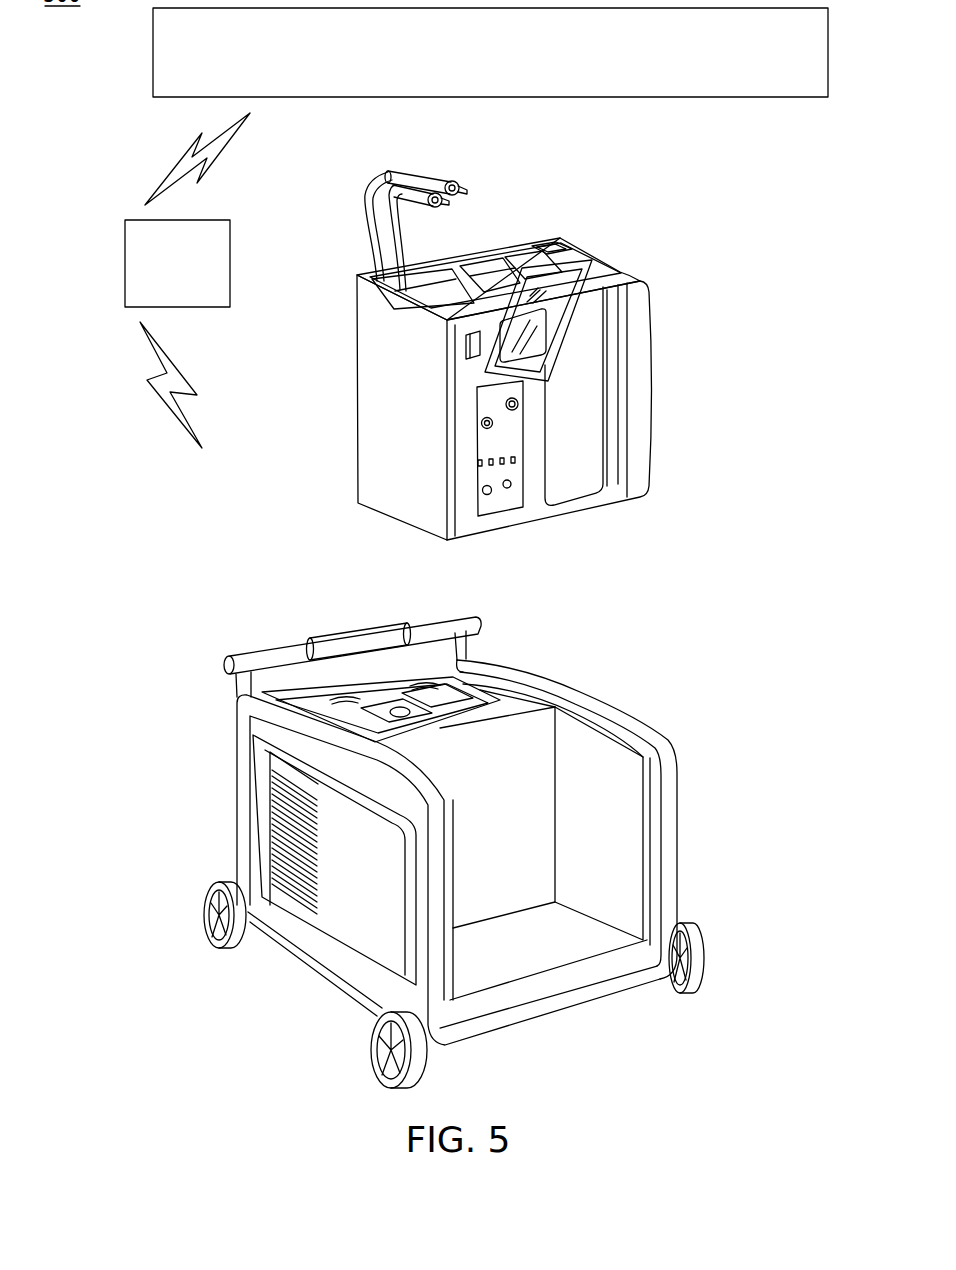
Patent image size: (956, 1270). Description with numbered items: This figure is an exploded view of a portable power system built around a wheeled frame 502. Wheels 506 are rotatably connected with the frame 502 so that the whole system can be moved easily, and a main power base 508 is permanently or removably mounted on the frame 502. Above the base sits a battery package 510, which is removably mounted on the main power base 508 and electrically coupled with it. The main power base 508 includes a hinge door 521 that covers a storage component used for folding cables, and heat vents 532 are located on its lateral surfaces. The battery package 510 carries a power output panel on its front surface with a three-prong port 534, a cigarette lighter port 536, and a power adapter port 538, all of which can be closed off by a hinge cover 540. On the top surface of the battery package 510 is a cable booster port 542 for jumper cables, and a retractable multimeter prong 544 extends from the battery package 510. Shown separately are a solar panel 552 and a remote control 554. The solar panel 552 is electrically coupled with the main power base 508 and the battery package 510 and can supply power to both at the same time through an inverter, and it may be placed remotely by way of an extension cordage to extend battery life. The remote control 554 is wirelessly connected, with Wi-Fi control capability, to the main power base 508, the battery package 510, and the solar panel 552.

The frame 502 is at (670, 878).
The wheels 506 is at (225, 882).
The main power base 508 is at (519, 705).
The battery package 510 is at (357, 505).
The hinge door 521 is at (385, 697).
The heat vents 532 is at (300, 888).
The 3-prong port 534 is at (487, 495).
The cigarette lighter port 536 is at (481, 423).
The power adapter port 538 is at (506, 403).
The hinge cover 540 is at (597, 277).
The cable booster port 542 is at (542, 243).
The retractable multimeter prong 544 is at (432, 178).
The solar panel 552 is at (490, 52).
The remote control 554 is at (177, 263).